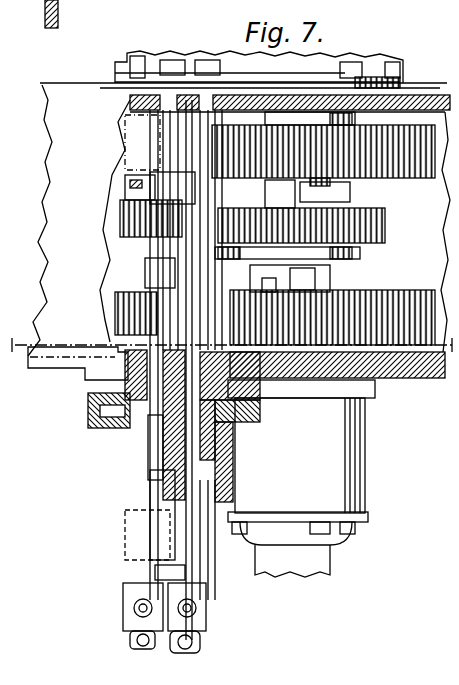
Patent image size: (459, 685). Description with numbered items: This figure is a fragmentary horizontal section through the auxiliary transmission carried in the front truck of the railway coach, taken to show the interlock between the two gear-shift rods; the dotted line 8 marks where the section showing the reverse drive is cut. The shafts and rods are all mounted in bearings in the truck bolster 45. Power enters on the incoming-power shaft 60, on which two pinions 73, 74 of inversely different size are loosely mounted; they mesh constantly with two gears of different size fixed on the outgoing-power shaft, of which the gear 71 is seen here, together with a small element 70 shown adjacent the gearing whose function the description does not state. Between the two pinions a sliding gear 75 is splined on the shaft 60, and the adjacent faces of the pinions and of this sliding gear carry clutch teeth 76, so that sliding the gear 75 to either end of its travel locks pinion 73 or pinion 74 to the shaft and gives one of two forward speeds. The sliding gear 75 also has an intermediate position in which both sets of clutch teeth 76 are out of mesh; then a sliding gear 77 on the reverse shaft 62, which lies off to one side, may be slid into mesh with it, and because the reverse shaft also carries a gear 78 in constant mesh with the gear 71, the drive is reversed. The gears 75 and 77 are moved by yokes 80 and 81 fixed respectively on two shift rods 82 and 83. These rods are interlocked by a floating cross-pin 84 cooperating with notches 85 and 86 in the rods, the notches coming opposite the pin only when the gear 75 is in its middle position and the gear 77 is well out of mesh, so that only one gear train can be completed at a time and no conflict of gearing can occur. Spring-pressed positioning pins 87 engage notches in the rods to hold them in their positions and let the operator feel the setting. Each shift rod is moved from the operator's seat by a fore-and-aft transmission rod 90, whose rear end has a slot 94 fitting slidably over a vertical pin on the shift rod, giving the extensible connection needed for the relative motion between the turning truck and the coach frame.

The section line 8 is at (229, 352).
The truck bolster 45 is at (62, 368).
The incoming-power shaft 60 is at (335, 280).
The reverse shaft 62 is at (158, 258).
The pinion 70 is at (262, 283).
The gear 71 is at (422, 362).
The pinion 73 is at (365, 315).
The pinion 74 is at (381, 150).
The sliding gear 75 is at (388, 226).
The clutch teeth 76 is at (355, 192).
The sliding gear 77 is at (118, 232).
The gear 78 is at (115, 320).
The yoke 80 is at (370, 252).
The yoke 81 is at (125, 190).
The shift rod 82 is at (200, 580).
The shift rod 83 is at (135, 568).
The floating cross-pin 84 is at (140, 438).
The notch 85 is at (232, 455).
The notch 86 is at (138, 478).
The spring-pressed positioning pins 87 is at (118, 432).
The transmission rod 90 is at (130, 650).
The slot 94 is at (125, 620).